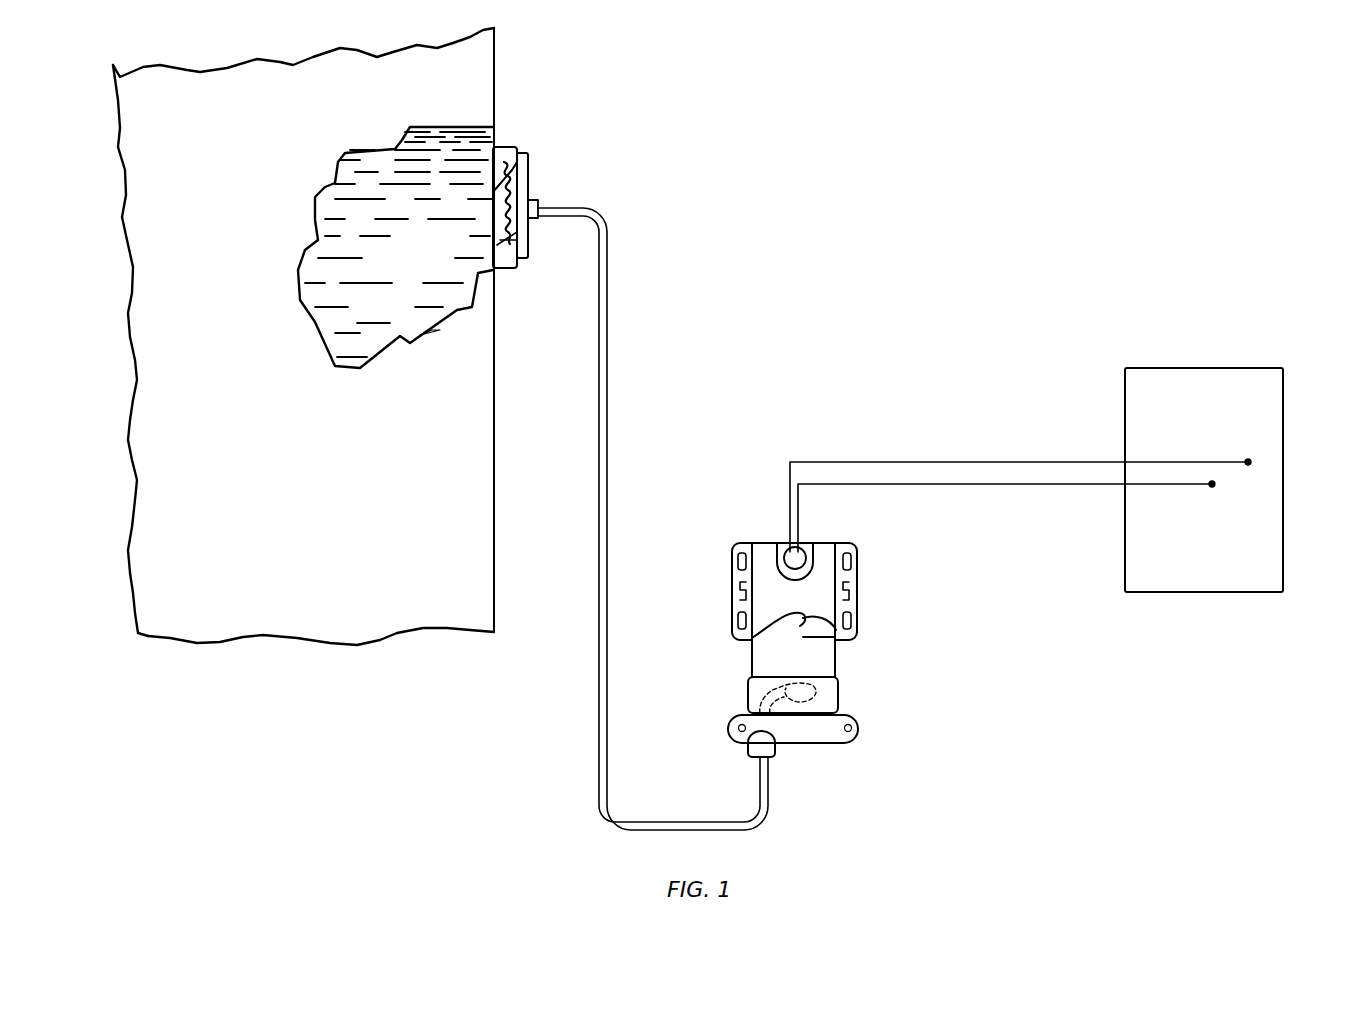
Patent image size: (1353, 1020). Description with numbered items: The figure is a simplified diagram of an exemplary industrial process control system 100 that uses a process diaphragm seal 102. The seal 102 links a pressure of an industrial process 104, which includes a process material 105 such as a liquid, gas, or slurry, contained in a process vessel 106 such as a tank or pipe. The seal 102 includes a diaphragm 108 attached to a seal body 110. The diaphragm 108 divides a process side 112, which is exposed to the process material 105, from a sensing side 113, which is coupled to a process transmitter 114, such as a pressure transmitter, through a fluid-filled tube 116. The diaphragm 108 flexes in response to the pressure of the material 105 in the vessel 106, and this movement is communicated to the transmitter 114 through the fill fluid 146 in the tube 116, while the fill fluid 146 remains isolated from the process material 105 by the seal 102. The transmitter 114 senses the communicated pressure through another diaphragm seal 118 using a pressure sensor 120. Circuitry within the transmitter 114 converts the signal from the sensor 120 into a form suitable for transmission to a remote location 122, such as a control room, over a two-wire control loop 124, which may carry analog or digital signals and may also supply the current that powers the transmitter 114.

The industrial process control system 100 is at (1072, 97).
The process diaphragm seal 102 is at (501, 183).
The industrial process 104 is at (303, 377).
The process material 105 is at (415, 330).
The process vessel 106 is at (380, 613).
The diaphragm 108 is at (510, 195).
The seal body 110 is at (521, 153).
The process side 112 is at (497, 212).
The sensing side 113 is at (512, 228).
The process transmitter 114 is at (811, 644).
The fluid-filled tube 116 is at (609, 270).
The diaphragm seal 118 is at (778, 740).
The pressure sensor 120 is at (838, 690).
The remote location 122 is at (1180, 368).
The two-wire control loop 124 is at (952, 483).
The fill fluid 146 is at (510, 216).